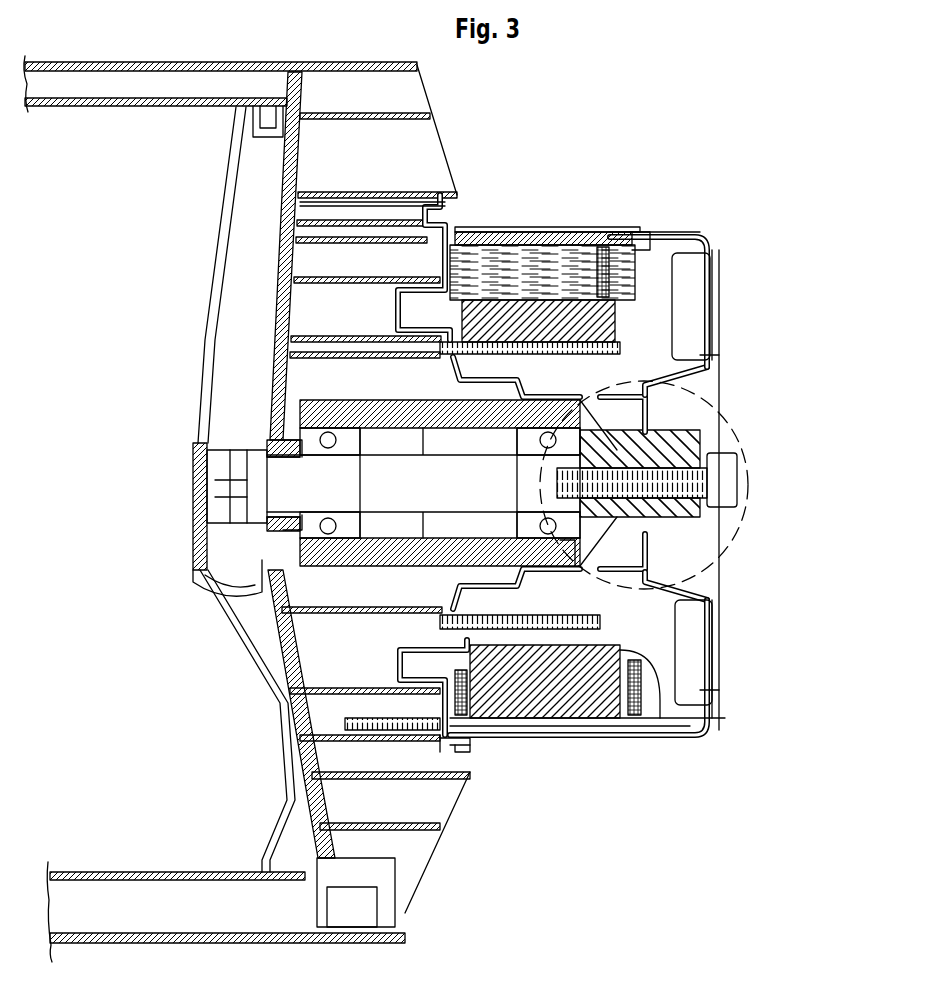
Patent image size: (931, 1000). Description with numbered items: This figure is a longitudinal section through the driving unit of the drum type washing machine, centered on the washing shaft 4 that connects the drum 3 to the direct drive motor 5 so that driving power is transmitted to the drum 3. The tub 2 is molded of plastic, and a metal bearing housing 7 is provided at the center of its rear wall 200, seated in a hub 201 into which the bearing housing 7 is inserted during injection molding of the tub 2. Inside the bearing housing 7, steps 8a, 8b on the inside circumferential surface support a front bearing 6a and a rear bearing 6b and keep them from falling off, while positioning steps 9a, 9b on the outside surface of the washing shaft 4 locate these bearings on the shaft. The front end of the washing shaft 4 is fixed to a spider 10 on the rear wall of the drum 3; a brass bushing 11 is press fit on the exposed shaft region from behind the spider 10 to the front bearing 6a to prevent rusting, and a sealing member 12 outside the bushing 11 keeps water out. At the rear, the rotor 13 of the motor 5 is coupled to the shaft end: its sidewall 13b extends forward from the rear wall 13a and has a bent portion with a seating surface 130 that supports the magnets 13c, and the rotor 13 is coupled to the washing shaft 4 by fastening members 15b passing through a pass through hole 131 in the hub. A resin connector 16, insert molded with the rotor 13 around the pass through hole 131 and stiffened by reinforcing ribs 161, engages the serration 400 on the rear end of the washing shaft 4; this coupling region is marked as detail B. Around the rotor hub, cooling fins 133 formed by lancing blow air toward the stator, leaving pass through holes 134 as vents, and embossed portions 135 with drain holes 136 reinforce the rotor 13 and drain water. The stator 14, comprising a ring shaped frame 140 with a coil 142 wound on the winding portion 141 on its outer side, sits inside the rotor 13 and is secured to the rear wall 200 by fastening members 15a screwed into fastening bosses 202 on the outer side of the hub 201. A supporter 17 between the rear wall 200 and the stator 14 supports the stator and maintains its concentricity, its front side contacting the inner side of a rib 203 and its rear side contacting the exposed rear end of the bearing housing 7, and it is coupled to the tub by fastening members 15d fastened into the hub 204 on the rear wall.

The tub 2 is at (181, 945).
The drum 3 is at (163, 872).
The washing shaft 4 is at (215, 497).
The motor 5 is at (711, 464).
The front bearing 6a is at (300, 440).
The rear bearing 6b is at (565, 560).
The bearing housing 7 is at (442, 420).
The step 8a is at (330, 432).
The step 8b is at (548, 432).
The positioning step 9a is at (356, 575).
The positioning step 9b is at (516, 545).
The spider 10 is at (215, 466).
The brass bushing 11 is at (300, 540).
The sealing member 12 is at (255, 432).
The rotor 13 is at (715, 270).
The rear wall 13a is at (720, 710).
The sidewall 13b is at (577, 232).
The magnets 13c is at (487, 235).
The stator 14 is at (690, 235).
The fastening members 15a is at (418, 340).
The fastening members 15b is at (520, 480).
The fastening members 15d is at (345, 722).
The connector 16 is at (690, 512).
The supporter 17 is at (458, 746).
The seating surface 130 is at (626, 249).
The pass through hole 131 is at (650, 550).
The cooling fins 133 is at (690, 322).
The pass through hole 134 is at (715, 285).
The embossed portions 135 is at (716, 348).
The drain hole 136 is at (718, 640).
The frame 140 is at (652, 690).
The coil 141 is at (548, 245).
The coil 142 is at (601, 247).
The reinforcing ribs 161 is at (665, 430).
The rear wall 200 is at (438, 878).
The hub 201 is at (322, 565).
The fastening bosses 202 is at (300, 345).
The rib 203 is at (420, 195).
The hub 204 is at (425, 740).
The serration 400 is at (737, 478).
The detail region B is at (725, 390).